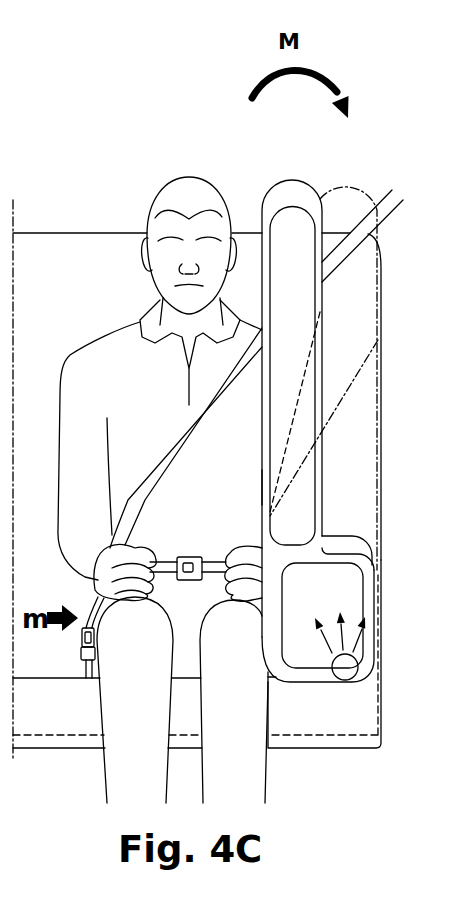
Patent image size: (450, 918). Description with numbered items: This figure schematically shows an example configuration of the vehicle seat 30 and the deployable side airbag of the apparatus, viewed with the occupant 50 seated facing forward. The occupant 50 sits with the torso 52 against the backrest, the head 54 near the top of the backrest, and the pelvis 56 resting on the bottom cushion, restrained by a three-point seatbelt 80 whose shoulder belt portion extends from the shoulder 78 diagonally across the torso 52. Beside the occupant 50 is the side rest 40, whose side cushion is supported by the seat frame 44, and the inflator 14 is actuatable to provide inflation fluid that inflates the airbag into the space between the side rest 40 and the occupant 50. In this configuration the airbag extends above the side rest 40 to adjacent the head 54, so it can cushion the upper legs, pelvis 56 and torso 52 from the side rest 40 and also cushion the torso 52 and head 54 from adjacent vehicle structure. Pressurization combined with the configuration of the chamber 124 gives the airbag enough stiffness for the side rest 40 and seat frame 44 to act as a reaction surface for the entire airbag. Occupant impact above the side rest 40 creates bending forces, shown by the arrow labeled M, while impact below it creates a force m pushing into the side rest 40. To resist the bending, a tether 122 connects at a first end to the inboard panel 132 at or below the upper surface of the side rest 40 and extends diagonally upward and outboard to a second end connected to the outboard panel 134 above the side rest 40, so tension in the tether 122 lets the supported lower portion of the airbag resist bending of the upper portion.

The inflator 14 is at (345, 667).
The vehicle seat 30 is at (40, 220).
The side rest 40 is at (386, 729).
The seat frame 44 is at (353, 737).
The vehicle occupant 50 is at (141, 463).
The torso 52 is at (100, 529).
The head 54 is at (220, 190).
The pelvis/buttocks 56 is at (62, 592).
The shoulder 78 is at (52, 358).
The seatbelt 80 is at (384, 194).
The tether 122 is at (301, 392).
The chamber 124 is at (316, 497).
The inboard panel 132 is at (250, 488).
The outboard panel 134 is at (333, 298).